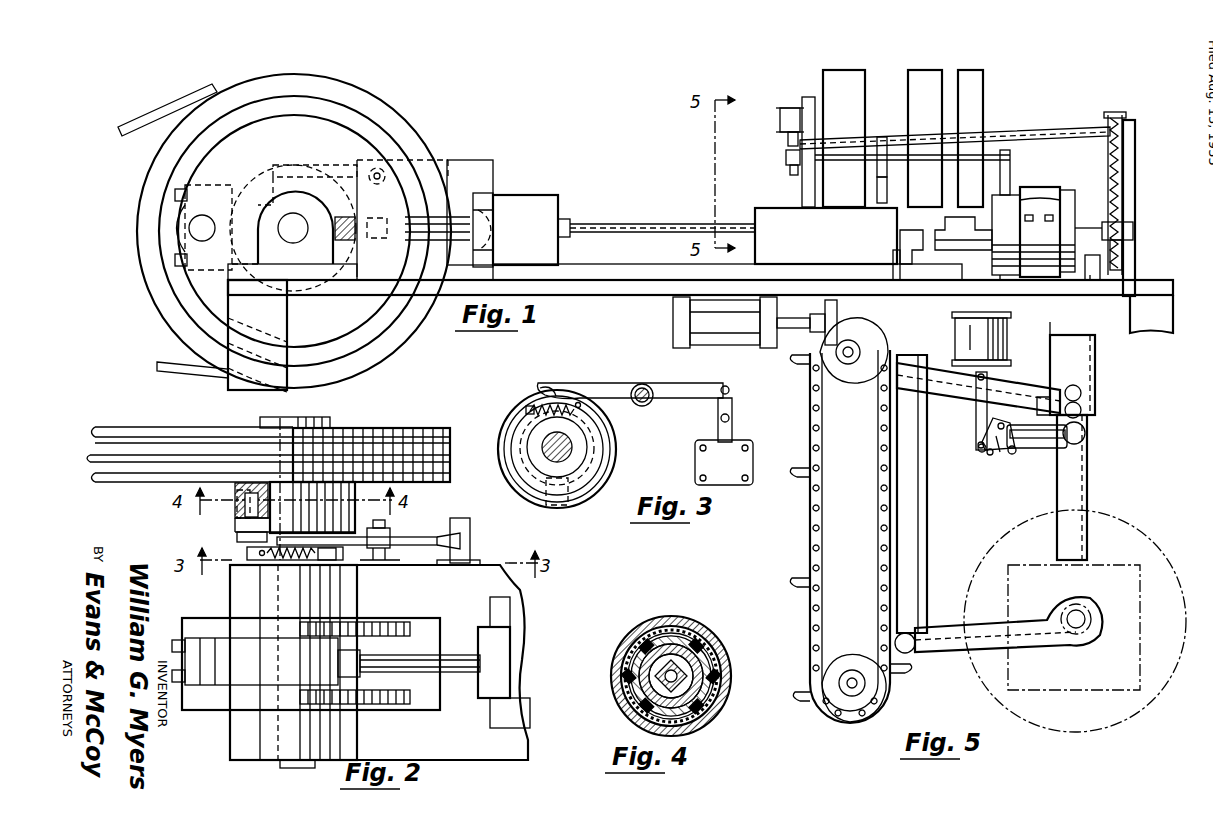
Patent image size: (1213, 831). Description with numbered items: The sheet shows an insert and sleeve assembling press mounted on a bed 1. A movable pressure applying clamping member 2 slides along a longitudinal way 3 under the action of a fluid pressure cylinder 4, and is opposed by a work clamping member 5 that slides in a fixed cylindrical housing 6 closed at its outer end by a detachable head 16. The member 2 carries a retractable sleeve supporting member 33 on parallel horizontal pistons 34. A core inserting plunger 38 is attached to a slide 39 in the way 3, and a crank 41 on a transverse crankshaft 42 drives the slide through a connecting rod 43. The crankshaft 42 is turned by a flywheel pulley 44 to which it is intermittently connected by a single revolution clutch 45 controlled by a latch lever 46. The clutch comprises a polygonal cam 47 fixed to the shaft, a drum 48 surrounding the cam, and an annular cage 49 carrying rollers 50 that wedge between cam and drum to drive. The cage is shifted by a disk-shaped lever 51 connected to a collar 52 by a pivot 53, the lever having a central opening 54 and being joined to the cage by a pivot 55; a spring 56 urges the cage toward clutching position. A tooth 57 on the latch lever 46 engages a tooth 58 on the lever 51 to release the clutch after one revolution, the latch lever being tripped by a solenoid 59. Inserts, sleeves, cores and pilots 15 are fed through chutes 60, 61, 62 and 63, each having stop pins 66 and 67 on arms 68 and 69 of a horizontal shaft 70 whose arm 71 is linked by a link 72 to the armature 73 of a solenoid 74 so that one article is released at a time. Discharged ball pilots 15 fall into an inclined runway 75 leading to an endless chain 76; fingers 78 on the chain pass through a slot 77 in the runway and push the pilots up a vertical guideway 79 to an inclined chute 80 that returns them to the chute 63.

In FIG. 1, the bed 1 is at (1115, 300).
In FIG. 2, the bed 1 is at (505, 752).
In FIG. 5, the bed 1 is at (1125, 352).
In FIG. 1, the pressure applying clamping member 2 is at (758, 208).
In FIG. 5, the pressure applying clamping member 2 is at (1140, 598).
In FIG. 1, the longitudinal way 3 is at (608, 290).
In FIG. 2, the longitudinal way 3 is at (512, 617).
In FIG. 1, the fluid pressure cylinder 4 is at (740, 333).
In FIG. 1, the work clamping member 5 is at (962, 250).
In FIG. 1, the cylindrical housing 6 is at (1062, 197).
In FIG. 5, the cylindrical housing 6 is at (1150, 555).
In FIG. 5, the pilot 15 is at (1085, 437).
In FIG. 1, the head 16 is at (1092, 278).
In FIG. 5, the head 16 is at (1070, 318).
In FIG. 1, the retractable sleeve supporting member 33 is at (905, 265).
In FIG. 5, the retractable sleeve supporting member 33 is at (923, 310).
In FIG. 1, the pistons 34 is at (900, 238).
In FIG. 1, the core inserting plunger 38 is at (650, 222).
In FIG. 1, the slide 39 is at (548, 197).
In FIG. 2, the slide 39 is at (492, 680).
In FIG. 1, the crank 41 is at (232, 213).
In FIG. 2, the crank 41 is at (220, 705).
In FIG. 1, the crankshaft 42 is at (298, 222).
In FIG. 2, the crankshaft 42 is at (308, 417).
In FIG. 3, the crankshaft 42 is at (545, 455).
In FIG. 4, the crankshaft 42 is at (640, 692).
In FIG. 1, the connecting rod 43 is at (462, 222).
In FIG. 2, the connecting rod 43 is at (452, 655).
In FIG. 1, the flywheel pulley 44 is at (168, 318).
In FIG. 2, the flywheel pulley 44 is at (400, 435).
In FIG. 1, the single revolution clutch 45 is at (270, 170).
In FIG. 2, the single revolution clutch 45 is at (226, 518).
In FIG. 3, the single revolution clutch 45 is at (525, 387).
In FIG. 4, the single revolution clutch 45 is at (620, 622).
In FIG. 1, the latch lever 46 is at (430, 160).
In FIG. 2, the latch lever 46 is at (425, 537).
In FIG. 3, the latch lever 46 is at (615, 388).
In FIG. 4, the polygonal cam 47 is at (690, 655).
In FIG. 2, the drum 48 is at (245, 493).
In FIG. 4, the drum 48 is at (671, 616).
In FIG. 4, the annular cage 49 is at (706, 662).
In FIG. 2, the rollers 50 is at (243, 535).
In FIG. 4, the rollers 50 is at (620, 668).
In FIG. 3, the disk-shaped lever 51 is at (590, 408).
In FIG. 2, the collar 52 is at (278, 562).
In FIG. 3, the collar 52 is at (596, 457).
In FIG. 3, the pivot 53 is at (606, 475).
In FIG. 3, the central opening 54 is at (600, 434).
In FIG. 3, the pivot 55 is at (572, 500).
In FIG. 2, the spring 56 is at (325, 560).
In FIG. 3, the spring 56 is at (540, 392).
In FIG. 3, the tooth 57 is at (548, 385).
In FIG. 3, the tooth 58 is at (560, 400).
In FIG. 2, the solenoid 59 is at (470, 535).
In FIG. 3, the solenoid 59 is at (745, 458).
In FIG. 1, the chute 60 is at (978, 78).
In FIG. 1, the chute 61 is at (912, 80).
In FIG. 5, the chute 61 is at (1095, 372).
In FIG. 1, the chute 62 is at (830, 77).
In FIG. 1, the chute 63 is at (879, 200).
In FIG. 5, the chute 63 is at (1092, 492).
In FIG. 5, the stop pins 66 is at (1025, 450).
In FIG. 5, the stop pins 67 is at (1045, 450).
In FIG. 5, the arms 68 is at (990, 420).
In FIG. 5, the arms 69 is at (1012, 455).
In FIG. 1, the horizontal shaft 70 is at (1006, 153).
In FIG. 5, the horizontal shaft 70 is at (998, 455).
In FIG. 1, the arm 71 is at (791, 171).
In FIG. 5, the arm 71 is at (988, 456).
In FIG. 1, the link 72 is at (786, 155).
In FIG. 5, the link 72 is at (978, 449).
In FIG. 1, the armature 73 is at (788, 139).
In FIG. 5, the armature 73 is at (990, 380).
In FIG. 1, the solenoid 74 is at (783, 112).
In FIG. 5, the solenoid 74 is at (1008, 325).
In FIG. 1, the inclined runway 75 is at (1134, 231).
In FIG. 5, the inclined runway 75 is at (1052, 648).
In FIG. 1, the endless chain 76 is at (1115, 112).
In FIG. 5, the endless chain 76 is at (870, 512).
In FIG. 5, the slot 77 is at (912, 655).
In FIG. 5, the fingers 78 is at (798, 582).
In FIG. 1, the vertical guideway 79 is at (1136, 162).
In FIG. 5, the vertical guideway 79 is at (925, 520).
In FIG. 1, the inclined chute 80 is at (882, 137).
In FIG. 5, the inclined chute 80 is at (950, 390).